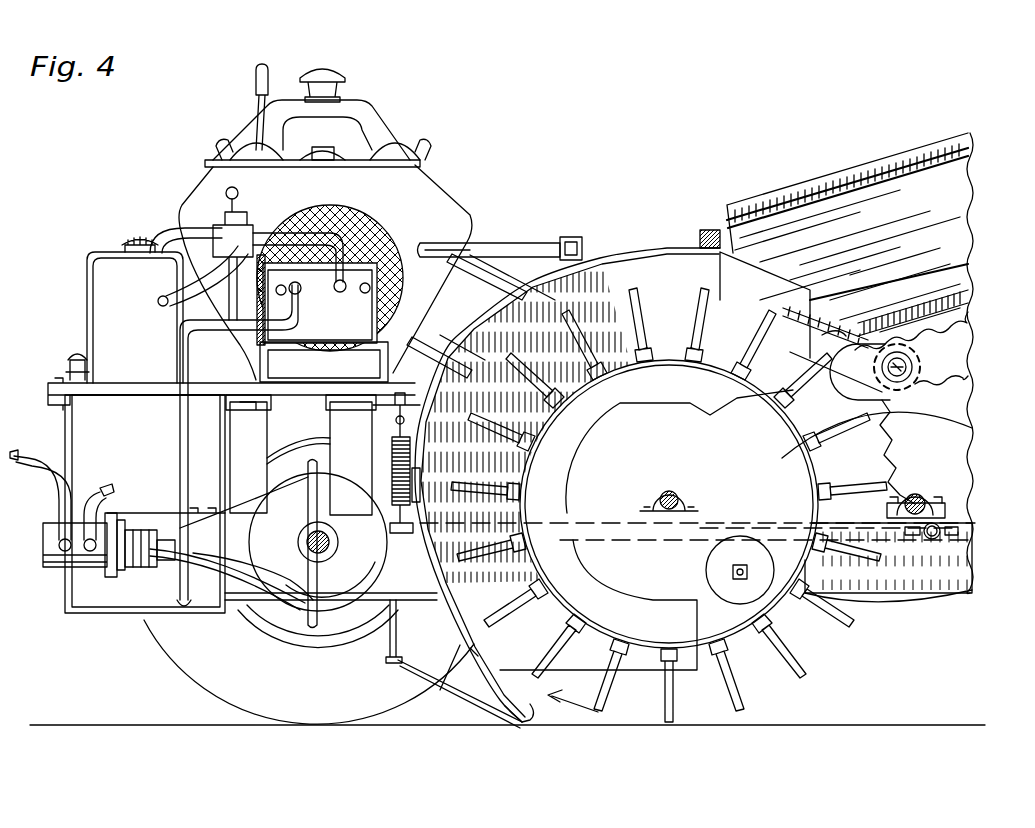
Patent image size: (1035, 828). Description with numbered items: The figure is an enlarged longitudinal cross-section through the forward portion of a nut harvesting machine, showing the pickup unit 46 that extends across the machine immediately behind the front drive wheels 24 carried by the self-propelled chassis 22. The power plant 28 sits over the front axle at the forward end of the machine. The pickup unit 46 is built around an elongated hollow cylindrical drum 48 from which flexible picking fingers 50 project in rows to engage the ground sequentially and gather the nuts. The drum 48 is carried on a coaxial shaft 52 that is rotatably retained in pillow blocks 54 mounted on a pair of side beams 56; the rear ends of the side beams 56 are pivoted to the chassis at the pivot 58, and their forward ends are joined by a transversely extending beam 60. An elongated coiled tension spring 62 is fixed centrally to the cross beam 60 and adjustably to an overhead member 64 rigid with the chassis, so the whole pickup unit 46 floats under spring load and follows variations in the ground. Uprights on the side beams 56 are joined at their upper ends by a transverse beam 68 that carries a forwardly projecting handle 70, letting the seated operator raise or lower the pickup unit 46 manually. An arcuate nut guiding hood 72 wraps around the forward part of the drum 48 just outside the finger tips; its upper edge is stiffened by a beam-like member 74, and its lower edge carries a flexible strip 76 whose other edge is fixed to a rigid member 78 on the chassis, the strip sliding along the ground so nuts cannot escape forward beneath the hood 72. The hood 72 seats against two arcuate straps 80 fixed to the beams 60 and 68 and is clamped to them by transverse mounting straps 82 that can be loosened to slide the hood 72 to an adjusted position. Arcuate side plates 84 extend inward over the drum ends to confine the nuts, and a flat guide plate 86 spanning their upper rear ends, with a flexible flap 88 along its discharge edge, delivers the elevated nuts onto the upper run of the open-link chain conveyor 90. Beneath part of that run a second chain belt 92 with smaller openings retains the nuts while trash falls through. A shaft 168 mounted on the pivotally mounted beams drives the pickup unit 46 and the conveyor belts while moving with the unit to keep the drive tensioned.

The self-propelled chassis 22 is at (903, 597).
The front drive wheels 24 is at (172, 637).
The power plant 28 is at (440, 200).
The pickup unit 46 is at (646, 260).
The drum 48 is at (780, 592).
The picking fingers 50 is at (790, 655).
The shaft 52 is at (668, 491).
The pillow blocks 54 is at (694, 500).
The side beams 56 is at (882, 530).
The pivot 58 is at (934, 540).
The transversely extending beam 60 is at (404, 540).
The coiled tension spring 62 is at (396, 481).
The overhead member 64 is at (398, 410).
The transverse beam 68 is at (566, 237).
The handle 70 is at (492, 241).
The nut guiding hood 72 is at (687, 236).
The beam-like member 74 is at (730, 248).
The flexible strip 76 is at (513, 724).
The rigid member 78 is at (392, 632).
The arcuate straps 80 is at (470, 348).
The transverse mounting straps 82 is at (603, 298).
The side plates 84 is at (774, 294).
The guide plate 86 is at (795, 308).
The flexible flap 88 is at (841, 315).
The chain conveyor 90 is at (950, 308).
The second chain belt 92 is at (945, 383).
The shaft 168 is at (920, 500).